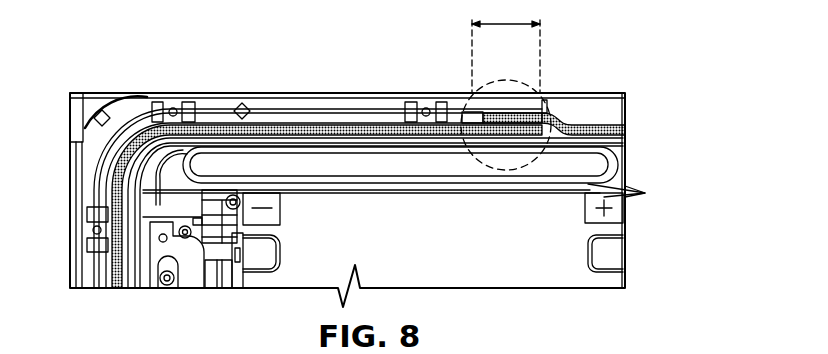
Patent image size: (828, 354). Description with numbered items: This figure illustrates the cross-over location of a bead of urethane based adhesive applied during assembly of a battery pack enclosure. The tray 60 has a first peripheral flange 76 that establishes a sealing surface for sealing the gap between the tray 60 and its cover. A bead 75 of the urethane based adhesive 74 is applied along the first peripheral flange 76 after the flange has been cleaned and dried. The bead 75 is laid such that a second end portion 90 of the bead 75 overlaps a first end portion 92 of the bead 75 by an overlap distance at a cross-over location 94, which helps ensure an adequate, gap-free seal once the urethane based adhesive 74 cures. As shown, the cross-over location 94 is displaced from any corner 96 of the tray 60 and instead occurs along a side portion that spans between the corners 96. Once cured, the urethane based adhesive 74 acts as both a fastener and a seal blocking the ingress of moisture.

The tray 60 is at (603, 93).
The urethane based adhesive 74 is at (206, 110).
The bead 75 is at (297, 125).
The first peripheral flange 76 is at (340, 114).
The second end portion 90 is at (500, 128).
The first end portion 92 is at (484, 115).
The cross-over location 94 is at (501, 171).
The corner 96 is at (125, 107).